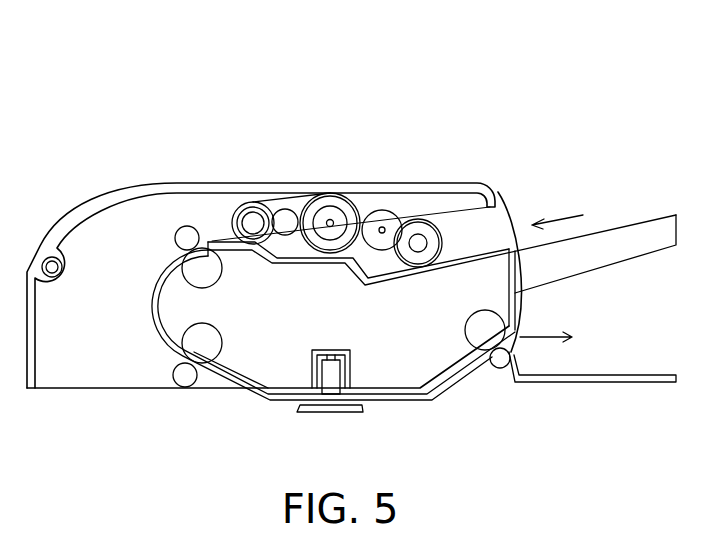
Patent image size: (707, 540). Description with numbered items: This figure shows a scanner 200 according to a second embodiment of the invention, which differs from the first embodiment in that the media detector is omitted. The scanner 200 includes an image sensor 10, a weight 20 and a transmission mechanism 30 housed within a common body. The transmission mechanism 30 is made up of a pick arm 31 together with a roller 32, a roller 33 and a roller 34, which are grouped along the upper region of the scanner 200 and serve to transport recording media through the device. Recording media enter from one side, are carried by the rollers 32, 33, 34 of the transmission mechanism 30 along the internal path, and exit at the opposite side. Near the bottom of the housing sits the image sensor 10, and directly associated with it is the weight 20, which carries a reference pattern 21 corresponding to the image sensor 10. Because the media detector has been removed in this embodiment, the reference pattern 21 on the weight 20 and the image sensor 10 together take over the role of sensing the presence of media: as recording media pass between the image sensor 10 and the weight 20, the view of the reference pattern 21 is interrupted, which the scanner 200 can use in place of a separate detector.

The scanner 200 is at (45, 31).
The transmission mechanism 30 is at (127, 100).
The pick arm 31 is at (418, 243).
The roller 32 is at (187, 238).
The roller 33 is at (183, 372).
The roller 34 is at (498, 192).
The weight 20 is at (334, 374).
The reference pattern 21 is at (332, 374).
The image sensor 10 is at (331, 412).